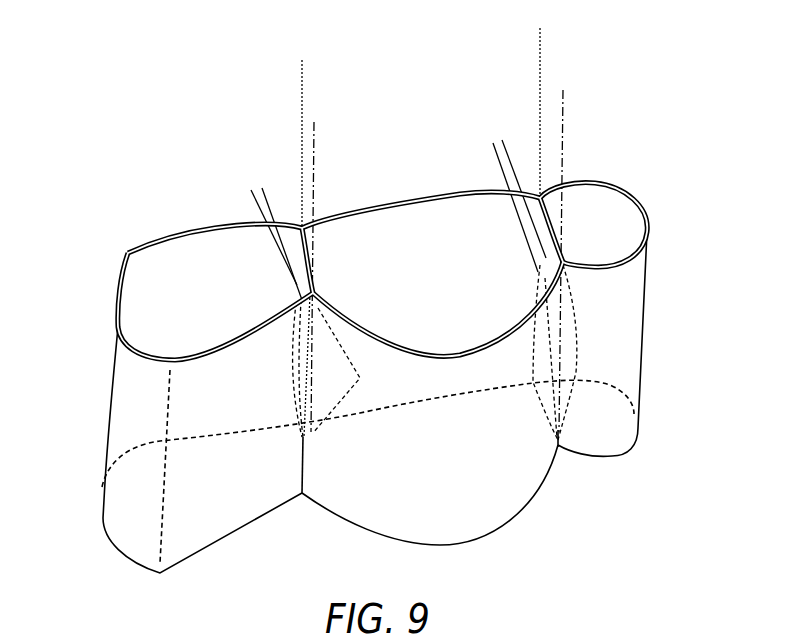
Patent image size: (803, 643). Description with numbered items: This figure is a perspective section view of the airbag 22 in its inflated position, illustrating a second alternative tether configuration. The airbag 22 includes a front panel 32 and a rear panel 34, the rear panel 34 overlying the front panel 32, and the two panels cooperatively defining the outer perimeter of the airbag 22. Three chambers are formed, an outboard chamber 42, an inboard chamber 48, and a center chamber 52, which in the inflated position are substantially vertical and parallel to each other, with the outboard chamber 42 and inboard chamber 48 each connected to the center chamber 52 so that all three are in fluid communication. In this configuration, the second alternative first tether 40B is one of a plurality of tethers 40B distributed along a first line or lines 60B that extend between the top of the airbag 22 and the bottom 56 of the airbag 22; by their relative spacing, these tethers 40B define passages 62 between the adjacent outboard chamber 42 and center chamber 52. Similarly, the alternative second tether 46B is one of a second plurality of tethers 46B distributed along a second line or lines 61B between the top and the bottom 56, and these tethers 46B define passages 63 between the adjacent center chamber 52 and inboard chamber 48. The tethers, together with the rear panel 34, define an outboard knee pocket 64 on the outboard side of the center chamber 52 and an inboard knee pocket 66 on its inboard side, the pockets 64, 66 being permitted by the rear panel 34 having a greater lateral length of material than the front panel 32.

The airbag 22 is at (664, 297).
The front panel 32 is at (375, 238).
The rear panel 34 is at (237, 508).
The second alternative first tether 40B is at (307, 377).
The outboard chamber 42 is at (128, 253).
The alternative second tether 46B is at (557, 343).
The inboard chamber 48 is at (627, 190).
The center chamber 52 is at (367, 205).
The bottom 56 is at (203, 557).
The first line 60B is at (313, 140).
The second line 61B is at (563, 122).
The passages 62 is at (263, 266).
The passages 63 is at (502, 220).
The outboard knee pocket 64 is at (305, 469).
The inboard knee pocket 66 is at (558, 430).